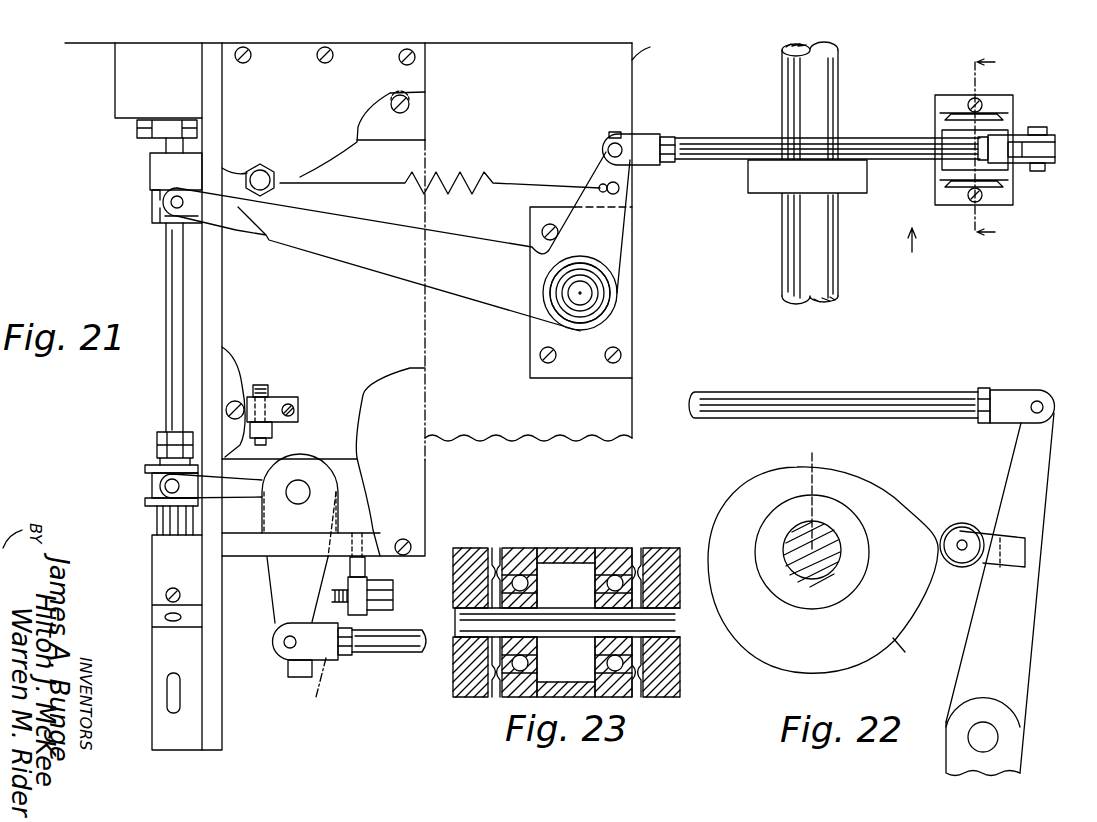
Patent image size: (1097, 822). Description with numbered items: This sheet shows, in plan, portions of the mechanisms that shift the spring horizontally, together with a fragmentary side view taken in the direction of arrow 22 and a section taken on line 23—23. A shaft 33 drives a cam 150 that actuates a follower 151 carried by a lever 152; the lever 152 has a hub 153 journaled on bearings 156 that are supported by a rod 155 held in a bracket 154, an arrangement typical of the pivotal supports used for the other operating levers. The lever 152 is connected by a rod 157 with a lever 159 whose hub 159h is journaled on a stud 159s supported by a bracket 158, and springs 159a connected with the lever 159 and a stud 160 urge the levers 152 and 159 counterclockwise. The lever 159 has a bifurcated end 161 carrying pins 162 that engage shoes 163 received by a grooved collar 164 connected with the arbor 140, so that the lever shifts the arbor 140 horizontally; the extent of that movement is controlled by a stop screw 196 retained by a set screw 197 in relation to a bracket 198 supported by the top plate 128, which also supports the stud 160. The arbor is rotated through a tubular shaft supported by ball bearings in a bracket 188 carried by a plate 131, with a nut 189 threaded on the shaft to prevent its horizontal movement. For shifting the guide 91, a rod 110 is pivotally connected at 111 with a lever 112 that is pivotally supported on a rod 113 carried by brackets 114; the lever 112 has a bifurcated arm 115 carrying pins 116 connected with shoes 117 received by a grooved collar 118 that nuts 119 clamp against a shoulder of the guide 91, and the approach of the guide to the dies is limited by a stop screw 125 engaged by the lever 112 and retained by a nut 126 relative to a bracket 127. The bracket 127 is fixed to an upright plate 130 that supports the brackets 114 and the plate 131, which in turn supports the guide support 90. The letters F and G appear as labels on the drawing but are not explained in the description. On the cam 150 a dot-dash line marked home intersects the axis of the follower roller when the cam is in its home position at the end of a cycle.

In FIG. 21, the plate 131 is at (210, 43).
In FIG. 21, the top plate 128 is at (298, 38).
In FIG. 21, the bracket 188 is at (114, 83).
In FIG. 21, the nut 189 is at (136, 129).
In FIG. 21, the grooved collar 164 is at (149, 168).
In FIG. 21, the pins 162 is at (160, 198).
In FIG. 21, the bifurcated end 161 is at (171, 203).
In FIG. 21, the shoes 163 is at (164, 218).
In FIG. 21, the stud 160 is at (272, 171).
In FIG. 21, the lever 159 is at (395, 232).
In FIG. 21, the springs 159a is at (470, 170).
In FIG. 21, the hub 159h is at (548, 290).
In FIG. 21, the stud 159s is at (593, 293).
In FIG. 21, the bracket 158 is at (529, 350).
In FIG. 21, the rod 157 is at (740, 132).
In FIG. 22, the rod 157 is at (822, 386).
In FIG. 21, the lever 152 is at (1060, 143).
In FIG. 22, the lever 152 is at (1016, 446).
In FIG. 21, the bracket 154 is at (1008, 175).
In FIG. 22, the bracket 154 is at (1005, 731).
In FIG. 23, the bracket 154 is at (475, 548).
In FIG. 21, the shaft 33 is at (840, 246).
In FIG. 22, the shaft 33 is at (812, 580).
In FIG. 21, the section line 23— 23 is at (996, 147).
In FIG. 21, the arrow 22 is at (910, 252).
In FIG. 21, the rod or arbor 140 is at (165, 385).
In FIG. 21, the nuts 119 is at (156, 437).
In FIG. 21, the grooved collar 118 is at (144, 468).
In FIG. 21, the shoes 117 is at (152, 487).
In FIG. 21, the pins 116 is at (165, 495).
In FIG. 21, the bifurcated arm 115 is at (256, 480).
In FIG. 21, the guide 91 is at (160, 521).
In FIG. 21, the guide support 90 is at (182, 742).
In FIG. 21, the upright plate 130 is at (235, 548).
In FIG. 21, the bracket 198 is at (311, 386).
In FIG. 21, the stop screw 196 is at (260, 386).
In FIG. 21, the set screw 197 is at (273, 432).
In FIG. 21, the rod 113 is at (300, 490).
In FIG. 21, the brackets 114 is at (340, 512).
In FIG. 21, the lever 112 is at (271, 592).
In FIG. 21, the pivotal connection 111 is at (285, 644).
In FIG. 21, the rod 110 is at (393, 655).
In FIG. 21, the stop screw 125 is at (332, 595).
In FIG. 21, the nut 126 is at (394, 590).
In FIG. 21, the bracket 127 is at (367, 567).
In FIG. 21, the axis F is at (318, 732).
In FIG. 21, the plate G is at (668, 46).
In FIG. 22, the plate G is at (925, 677).
In FIG. 22, the cam 150 is at (858, 486).
In FIG. 22, the follower 151 is at (964, 568).
In FIG. 22, the rod 155 is at (983, 722).
In FIG. 23, the rod 155 is at (578, 598).
In FIG. 23, the hub 153 is at (570, 548).
In FIG. 23, the bearings 156 is at (520, 570).